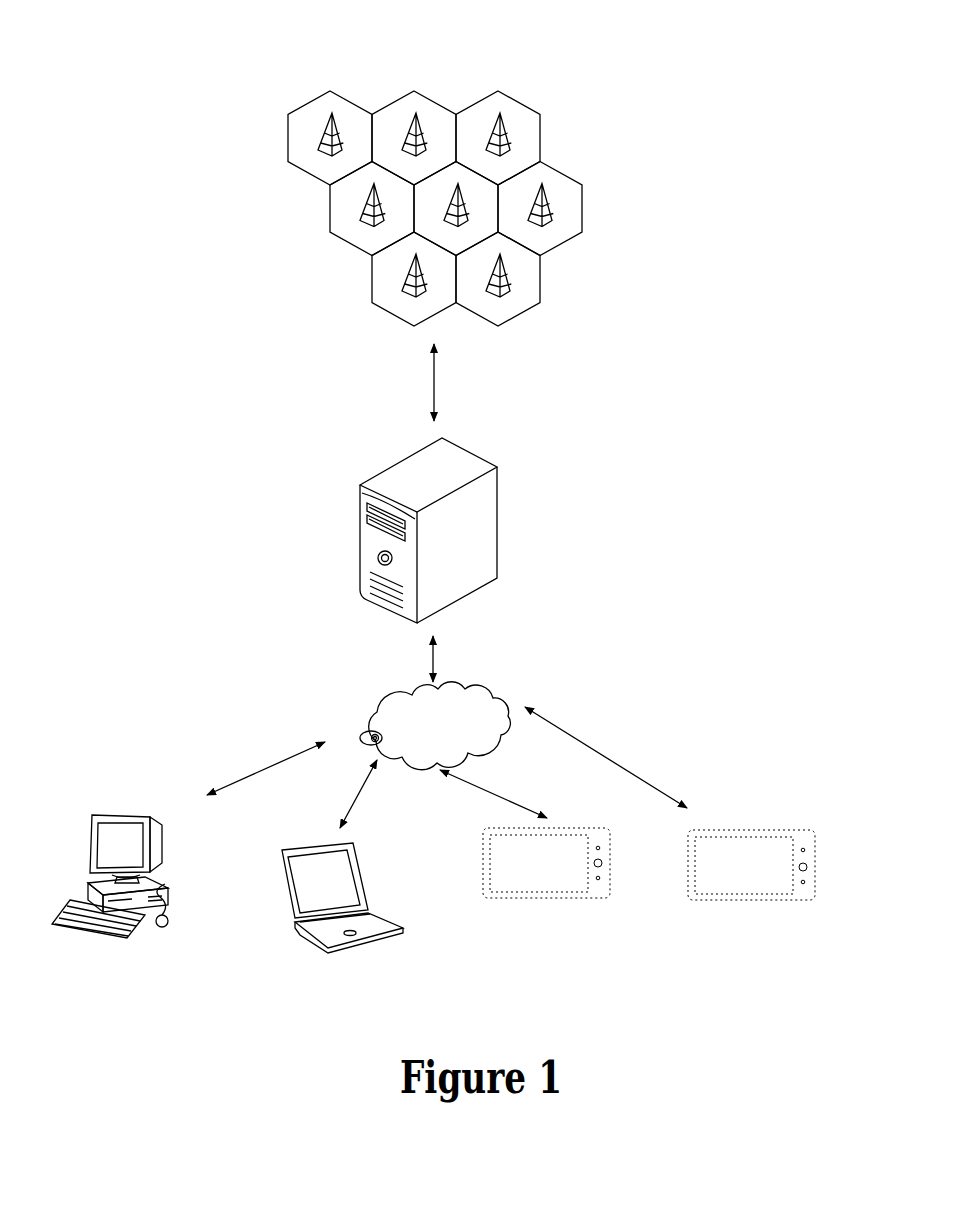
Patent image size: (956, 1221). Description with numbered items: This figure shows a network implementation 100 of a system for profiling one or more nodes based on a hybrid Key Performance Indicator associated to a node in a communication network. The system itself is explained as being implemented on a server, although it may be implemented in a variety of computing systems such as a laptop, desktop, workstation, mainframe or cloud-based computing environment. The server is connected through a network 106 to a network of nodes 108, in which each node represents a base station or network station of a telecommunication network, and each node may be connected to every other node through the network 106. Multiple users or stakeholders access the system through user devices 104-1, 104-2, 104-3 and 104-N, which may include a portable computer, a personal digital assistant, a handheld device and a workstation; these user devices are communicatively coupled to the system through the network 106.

The network implementation 100 is at (265, 72).
The network of nodes 108 is at (435, 196).
The network 106 is at (435, 726).
The user device 104-1 is at (110, 893).
The user device 104-2 is at (351, 898).
The user device 104-3 is at (546, 878).
The user device 104-N is at (751, 880).